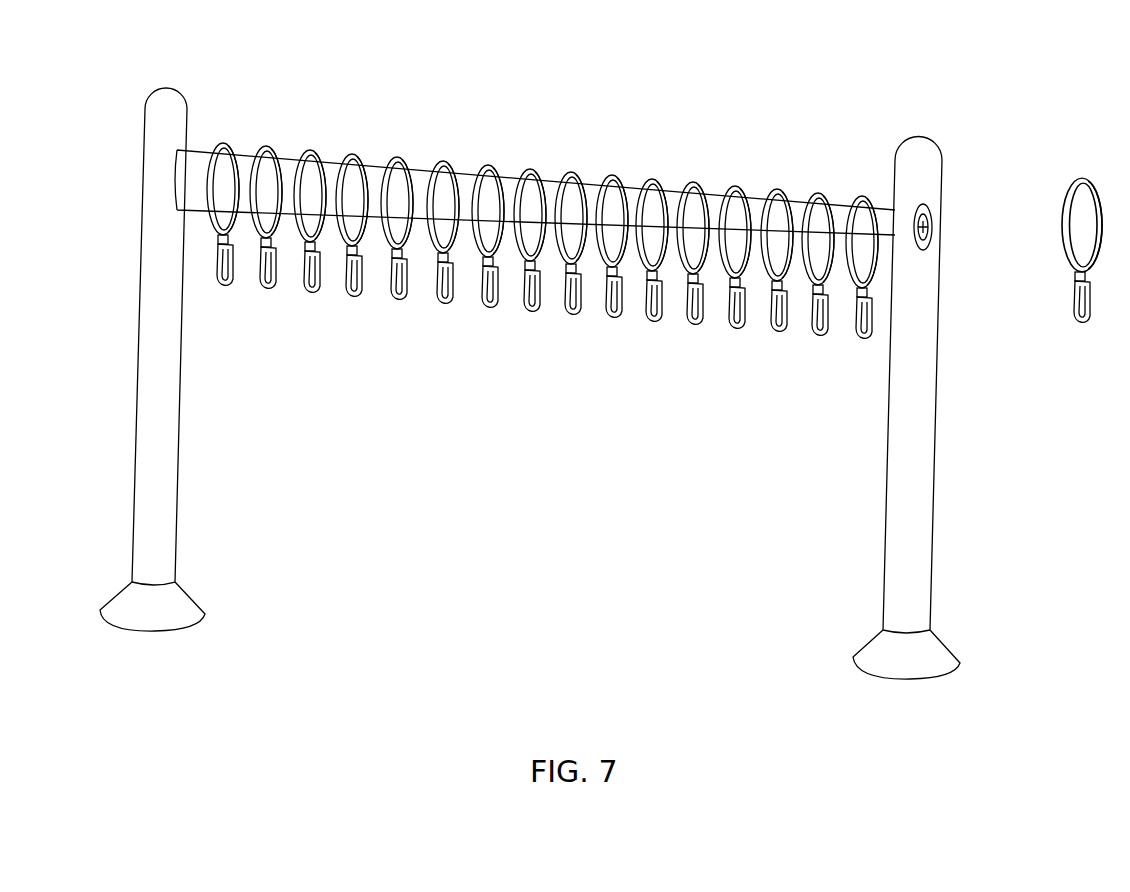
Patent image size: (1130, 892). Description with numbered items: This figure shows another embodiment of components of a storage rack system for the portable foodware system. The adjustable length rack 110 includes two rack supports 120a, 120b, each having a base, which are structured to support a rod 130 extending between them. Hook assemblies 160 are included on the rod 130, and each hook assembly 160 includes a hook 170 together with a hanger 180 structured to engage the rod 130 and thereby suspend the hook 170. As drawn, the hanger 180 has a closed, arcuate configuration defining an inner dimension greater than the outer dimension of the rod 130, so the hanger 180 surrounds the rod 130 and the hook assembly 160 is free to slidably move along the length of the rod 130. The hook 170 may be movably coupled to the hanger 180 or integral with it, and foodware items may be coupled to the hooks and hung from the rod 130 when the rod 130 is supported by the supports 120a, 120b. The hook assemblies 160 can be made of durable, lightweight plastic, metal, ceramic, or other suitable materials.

The rack 110 is at (128, 82).
The rack support 120a is at (172, 88).
The rack support 120b is at (920, 137).
The rod 130 is at (200, 150).
The hook assembly 160 is at (478, 148).
The hook 170 is at (487, 306).
The hanger 180 is at (532, 170).